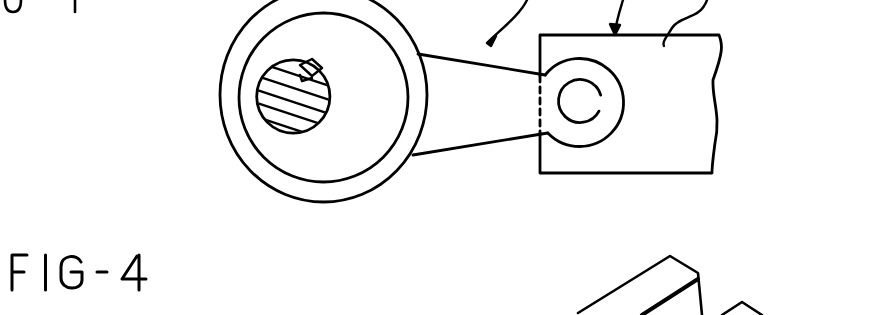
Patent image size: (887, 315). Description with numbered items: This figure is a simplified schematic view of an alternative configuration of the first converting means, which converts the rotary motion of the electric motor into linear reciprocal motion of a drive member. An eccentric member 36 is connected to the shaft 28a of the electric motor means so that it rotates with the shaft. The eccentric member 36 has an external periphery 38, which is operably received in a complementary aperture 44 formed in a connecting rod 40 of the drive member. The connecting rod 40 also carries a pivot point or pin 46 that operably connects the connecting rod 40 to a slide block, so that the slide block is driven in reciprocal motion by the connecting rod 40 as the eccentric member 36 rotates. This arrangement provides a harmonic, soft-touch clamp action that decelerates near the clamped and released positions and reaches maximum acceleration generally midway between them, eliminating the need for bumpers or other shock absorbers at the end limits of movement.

The shaft 28a is at (290, 131).
The eccentric member 36 is at (368, 80).
The external periphery 38 is at (365, 172).
The connecting rod 40 is at (493, 118).
The complementary aperture 44 is at (309, 176).
The pivot point or pin 46 is at (593, 105).